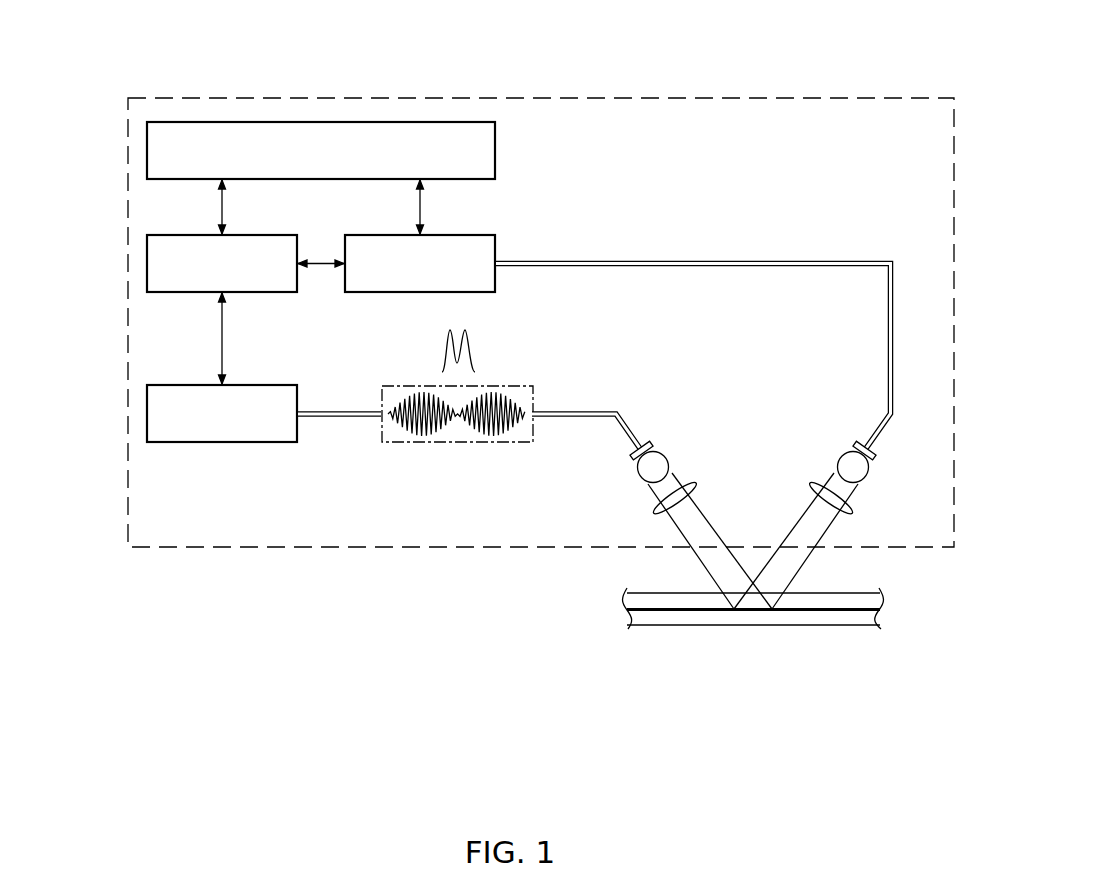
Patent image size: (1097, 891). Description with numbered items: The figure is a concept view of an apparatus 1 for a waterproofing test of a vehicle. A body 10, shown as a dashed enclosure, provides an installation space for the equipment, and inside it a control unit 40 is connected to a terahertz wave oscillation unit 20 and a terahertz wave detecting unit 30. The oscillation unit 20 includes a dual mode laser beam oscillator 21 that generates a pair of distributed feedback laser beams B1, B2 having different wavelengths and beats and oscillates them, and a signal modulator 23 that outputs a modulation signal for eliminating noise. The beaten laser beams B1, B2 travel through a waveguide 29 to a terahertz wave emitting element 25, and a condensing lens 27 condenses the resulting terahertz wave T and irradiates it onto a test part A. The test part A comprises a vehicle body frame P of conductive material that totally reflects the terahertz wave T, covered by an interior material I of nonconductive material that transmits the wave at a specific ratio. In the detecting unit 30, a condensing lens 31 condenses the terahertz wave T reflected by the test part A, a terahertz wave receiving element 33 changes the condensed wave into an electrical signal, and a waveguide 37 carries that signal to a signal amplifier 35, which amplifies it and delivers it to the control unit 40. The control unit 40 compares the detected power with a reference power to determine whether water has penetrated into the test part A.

The apparatus for a waterproofing test of a vehicle 1 is at (45, 149).
The body 10 is at (880, 97).
The terahertz wave oscillation unit 20 is at (415, 421).
The dual mode laser beam oscillator 21 is at (146, 413).
The signal modulator 23 is at (146, 262).
The terahertz wave emitting element 25 is at (655, 442).
The condensing lens 27 is at (652, 512).
The waveguide 29 is at (575, 411).
The terahertz wave detecting unit 30 is at (693, 350).
The condensing lens 31 is at (810, 484).
The terahertz wave receiving element 33 is at (856, 444).
The signal amplifier 35 is at (497, 275).
The waveguide 37 is at (692, 260).
The control unit 40 is at (496, 150).
The distributed feedback laser beam B1 is at (457, 458).
The distributed feedback laser beam B2 is at (474, 436).
The terahertz wave T is at (790, 524).
The test part A is at (848, 579).
The interior material I is at (868, 594).
The vehicle body frame P is at (774, 630).